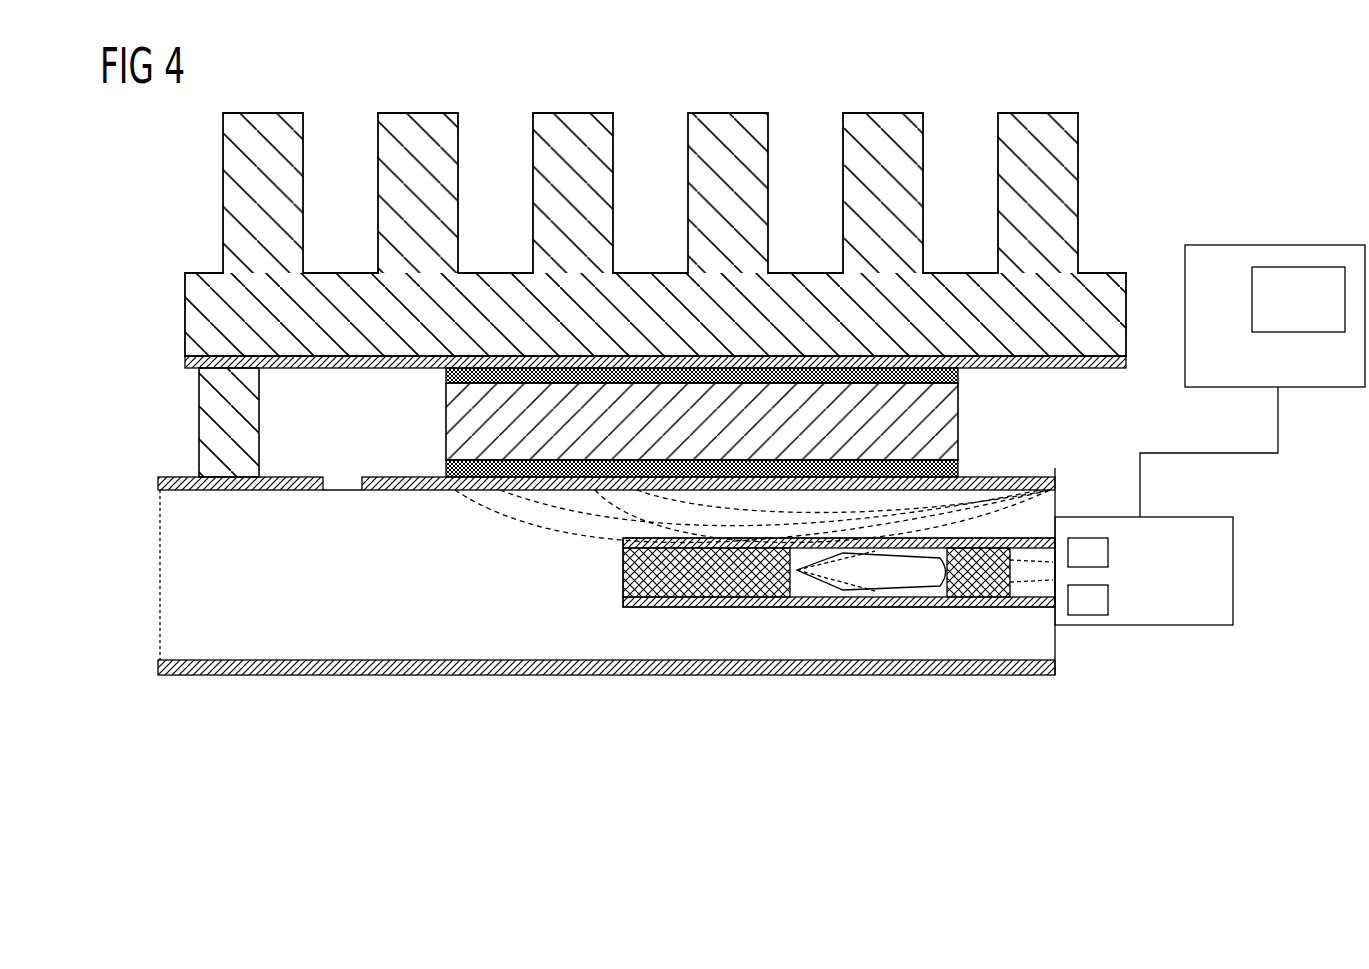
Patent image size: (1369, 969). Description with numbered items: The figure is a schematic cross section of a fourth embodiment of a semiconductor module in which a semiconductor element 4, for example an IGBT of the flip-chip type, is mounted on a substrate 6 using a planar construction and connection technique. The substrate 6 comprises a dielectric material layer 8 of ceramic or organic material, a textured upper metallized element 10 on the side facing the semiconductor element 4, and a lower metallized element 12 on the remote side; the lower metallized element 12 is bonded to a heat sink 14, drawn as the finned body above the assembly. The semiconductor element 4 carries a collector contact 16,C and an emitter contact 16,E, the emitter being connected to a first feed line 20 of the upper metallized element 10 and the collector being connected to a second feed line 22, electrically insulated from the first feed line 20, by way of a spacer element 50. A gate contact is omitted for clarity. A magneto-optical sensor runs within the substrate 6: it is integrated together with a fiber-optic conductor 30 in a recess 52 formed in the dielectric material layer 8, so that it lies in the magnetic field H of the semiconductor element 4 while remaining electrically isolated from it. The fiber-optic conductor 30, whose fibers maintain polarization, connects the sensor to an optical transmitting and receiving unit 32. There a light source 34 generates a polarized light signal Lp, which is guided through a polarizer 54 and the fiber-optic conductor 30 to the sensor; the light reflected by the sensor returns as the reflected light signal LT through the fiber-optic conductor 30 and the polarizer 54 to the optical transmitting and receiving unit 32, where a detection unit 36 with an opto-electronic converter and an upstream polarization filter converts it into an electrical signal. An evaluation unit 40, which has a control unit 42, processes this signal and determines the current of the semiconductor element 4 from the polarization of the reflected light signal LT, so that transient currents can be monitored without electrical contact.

The semiconductor element 4 is at (460, 420).
The substrate 6 is at (184, 576).
The dielectric material layer 8 is at (281, 645).
The upper metallized element 10 is at (158, 484).
The lower metallized element 12 is at (158, 665).
The heat sink 14 is at (1060, 152).
The collector contact 16,C is at (960, 383).
The emitter contact 16,E is at (960, 462).
The first feed line 20 is at (390, 490).
The second feed line 22 is at (286, 490).
The fiber-optic conductor 30 is at (866, 607).
The optical transmitting and receiving unit 32 is at (1183, 625).
The light source 34 is at (1085, 538).
The detection unit 36 is at (1088, 625).
The evaluation unit 40 is at (1272, 245).
The control unit 42 is at (1311, 315).
The spacer element 50 is at (212, 430).
The recess 52 is at (684, 607).
The polarizer 54 is at (984, 607).
The magnetic field H is at (576, 527).
The polarized light signal Lp is at (820, 600).
The reflected light signal LT is at (933, 600).